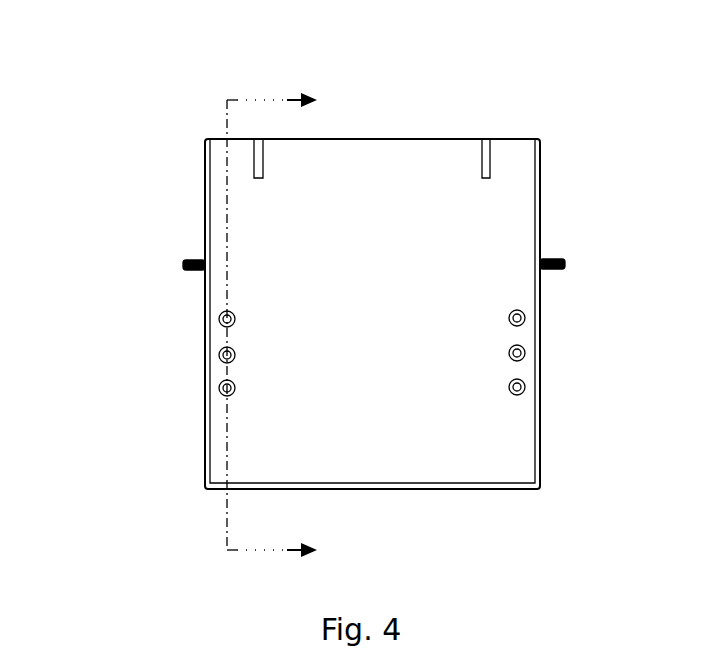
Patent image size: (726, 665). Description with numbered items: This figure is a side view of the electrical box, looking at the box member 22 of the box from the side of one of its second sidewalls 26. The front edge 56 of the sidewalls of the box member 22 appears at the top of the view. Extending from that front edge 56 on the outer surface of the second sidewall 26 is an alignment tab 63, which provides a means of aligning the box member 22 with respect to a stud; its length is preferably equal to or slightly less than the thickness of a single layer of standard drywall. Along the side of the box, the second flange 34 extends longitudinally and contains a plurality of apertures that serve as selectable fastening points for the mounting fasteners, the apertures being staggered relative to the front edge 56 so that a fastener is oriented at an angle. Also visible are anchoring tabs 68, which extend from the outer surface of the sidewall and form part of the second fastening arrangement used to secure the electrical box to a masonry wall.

The box member 22 is at (158, 159).
The second sidewall 26 is at (361, 276).
The second flange 34 is at (236, 356).
The front edge 56 is at (374, 139).
The alignment tab 63 is at (265, 160).
The anchoring tabs 68 is at (565, 263).